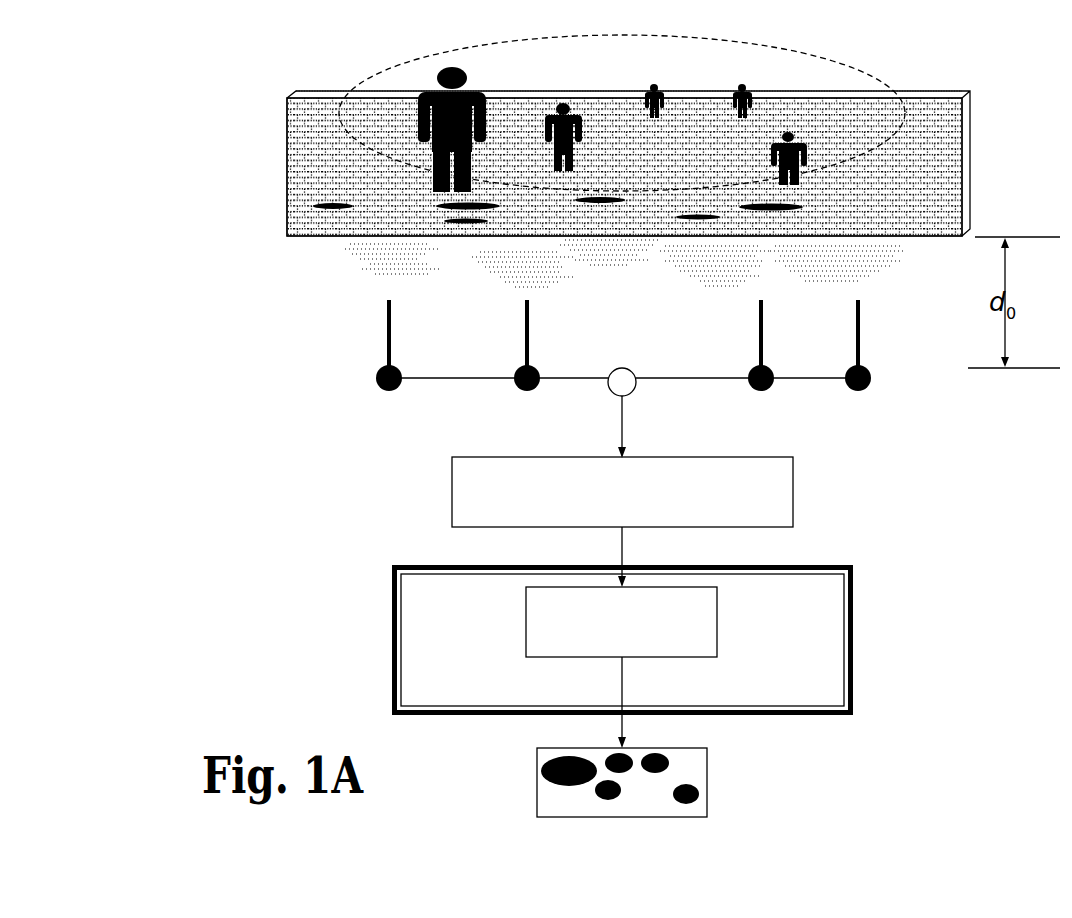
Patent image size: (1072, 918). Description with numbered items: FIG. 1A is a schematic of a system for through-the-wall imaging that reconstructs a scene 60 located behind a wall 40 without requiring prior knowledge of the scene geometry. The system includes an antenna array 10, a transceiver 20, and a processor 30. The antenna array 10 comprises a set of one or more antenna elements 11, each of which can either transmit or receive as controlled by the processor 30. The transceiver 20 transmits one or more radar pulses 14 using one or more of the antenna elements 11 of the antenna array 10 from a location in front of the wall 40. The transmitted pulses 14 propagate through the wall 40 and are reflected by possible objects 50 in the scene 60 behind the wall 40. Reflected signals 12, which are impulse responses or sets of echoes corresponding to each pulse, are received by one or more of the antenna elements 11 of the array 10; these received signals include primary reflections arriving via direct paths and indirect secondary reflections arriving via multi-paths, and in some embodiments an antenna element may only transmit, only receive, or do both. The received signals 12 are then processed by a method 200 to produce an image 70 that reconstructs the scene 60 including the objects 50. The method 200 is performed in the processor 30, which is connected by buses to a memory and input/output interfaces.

The antenna array 10 is at (445, 380).
The antenna elements 11 is at (525, 341).
The reflected signals 12 is at (597, 260).
The pulses 14 is at (823, 262).
The transceiver 20 is at (796, 503).
The processor 30 is at (855, 618).
The wall 40 is at (965, 166).
The objects 50 is at (452, 66).
The scene 60 is at (752, 44).
The image 70 is at (709, 780).
The method 200 is at (719, 630).